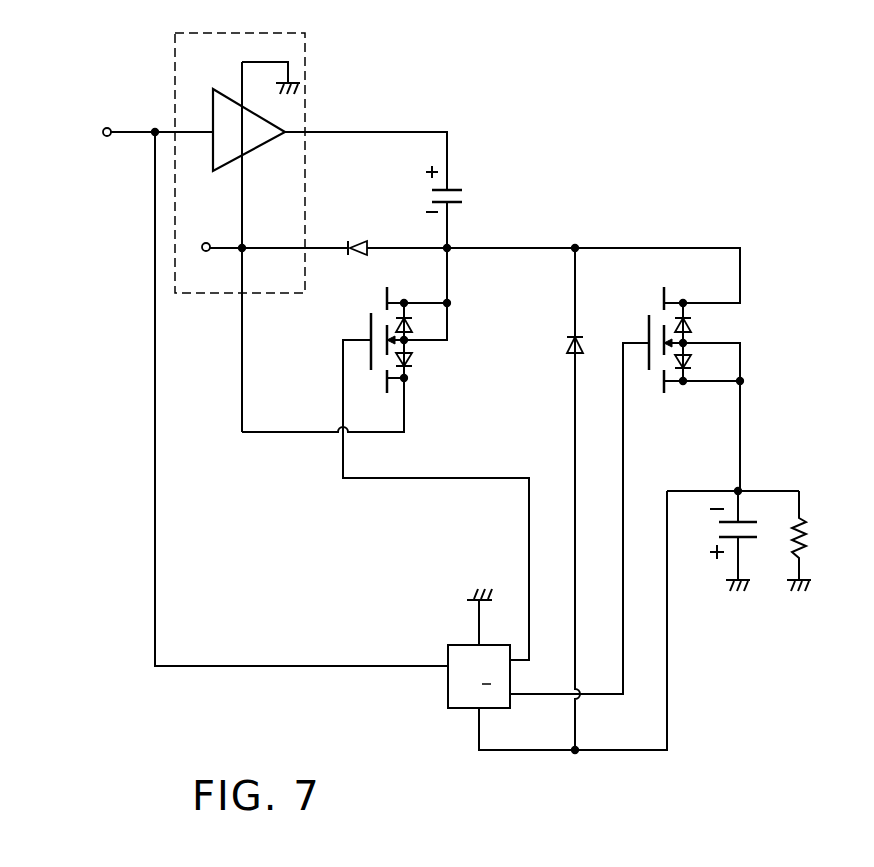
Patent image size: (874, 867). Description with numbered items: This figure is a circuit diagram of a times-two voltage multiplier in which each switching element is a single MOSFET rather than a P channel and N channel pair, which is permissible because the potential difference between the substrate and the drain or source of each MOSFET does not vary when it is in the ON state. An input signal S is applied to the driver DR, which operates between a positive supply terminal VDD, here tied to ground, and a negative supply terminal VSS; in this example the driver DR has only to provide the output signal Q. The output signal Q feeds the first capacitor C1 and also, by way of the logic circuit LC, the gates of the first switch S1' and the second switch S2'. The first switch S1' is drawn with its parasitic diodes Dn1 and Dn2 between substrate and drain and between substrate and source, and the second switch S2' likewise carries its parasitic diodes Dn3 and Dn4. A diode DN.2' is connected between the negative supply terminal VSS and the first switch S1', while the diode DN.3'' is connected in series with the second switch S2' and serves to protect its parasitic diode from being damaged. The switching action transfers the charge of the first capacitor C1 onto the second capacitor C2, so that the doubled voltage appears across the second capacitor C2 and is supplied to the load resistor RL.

The input signal S is at (262, 395).
The driver DR is at (297, 53).
The positive supply voltage terminal VDD is at (244, 64).
The output signal Q is at (330, 247).
The negative supply voltage terminal VSS is at (267, 235).
The first capacitor C1 is at (460, 209).
The diode DN.2' is at (540, 253).
The first switch S1' is at (385, 454).
The parasitic diode Dn1 is at (414, 322).
The parasitic diode Dn2 is at (414, 361).
The diode DN.3'' is at (549, 501).
The second switch S2' is at (646, 490).
The parasitic diode Dn3 is at (696, 323).
The parasitic diode Dn4 is at (696, 364).
The second capacitor C2 is at (639, 619).
The load resistor RL is at (812, 541).
The logic circuit LC is at (462, 648).